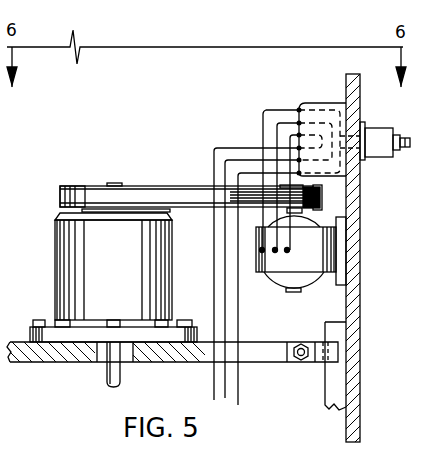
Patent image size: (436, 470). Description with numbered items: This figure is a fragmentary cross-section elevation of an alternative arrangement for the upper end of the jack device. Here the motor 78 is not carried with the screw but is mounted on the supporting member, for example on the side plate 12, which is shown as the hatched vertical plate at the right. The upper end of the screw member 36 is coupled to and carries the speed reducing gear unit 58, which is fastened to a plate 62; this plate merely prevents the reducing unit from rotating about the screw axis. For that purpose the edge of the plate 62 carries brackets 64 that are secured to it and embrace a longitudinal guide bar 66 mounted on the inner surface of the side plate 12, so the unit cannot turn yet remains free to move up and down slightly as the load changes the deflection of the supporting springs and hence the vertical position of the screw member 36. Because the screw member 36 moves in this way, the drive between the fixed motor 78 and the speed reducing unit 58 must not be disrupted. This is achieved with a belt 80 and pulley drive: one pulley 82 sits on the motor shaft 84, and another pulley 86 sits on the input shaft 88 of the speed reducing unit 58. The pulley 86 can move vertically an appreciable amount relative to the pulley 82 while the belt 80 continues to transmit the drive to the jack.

The side plate 12 is at (353, 332).
The screw member 36 is at (121, 375).
The speed reducing gear unit 58 is at (80, 266).
The plate 62 is at (48, 362).
The bracket 64 is at (308, 342).
The longitudinal guide bar 66 is at (333, 386).
The motor 78 is at (283, 268).
The belt 80 is at (177, 186).
The pulley 82 is at (322, 188).
The motor shaft 84 is at (302, 213).
The pulley 86 is at (86, 186).
The input shaft 88 is at (78, 210).